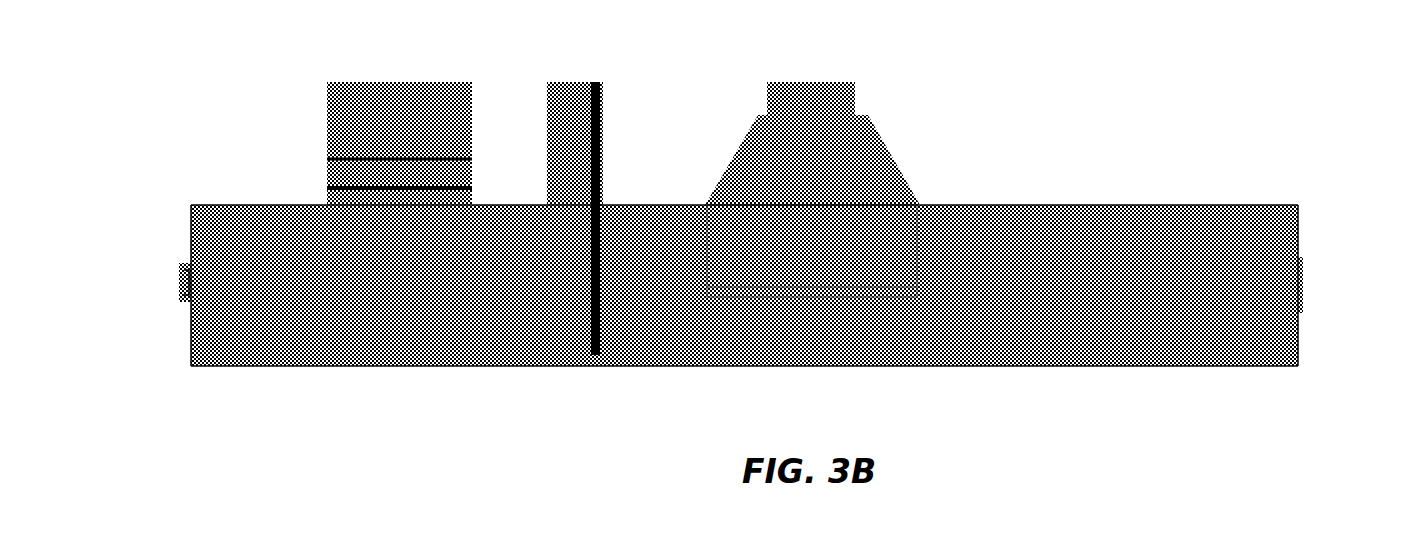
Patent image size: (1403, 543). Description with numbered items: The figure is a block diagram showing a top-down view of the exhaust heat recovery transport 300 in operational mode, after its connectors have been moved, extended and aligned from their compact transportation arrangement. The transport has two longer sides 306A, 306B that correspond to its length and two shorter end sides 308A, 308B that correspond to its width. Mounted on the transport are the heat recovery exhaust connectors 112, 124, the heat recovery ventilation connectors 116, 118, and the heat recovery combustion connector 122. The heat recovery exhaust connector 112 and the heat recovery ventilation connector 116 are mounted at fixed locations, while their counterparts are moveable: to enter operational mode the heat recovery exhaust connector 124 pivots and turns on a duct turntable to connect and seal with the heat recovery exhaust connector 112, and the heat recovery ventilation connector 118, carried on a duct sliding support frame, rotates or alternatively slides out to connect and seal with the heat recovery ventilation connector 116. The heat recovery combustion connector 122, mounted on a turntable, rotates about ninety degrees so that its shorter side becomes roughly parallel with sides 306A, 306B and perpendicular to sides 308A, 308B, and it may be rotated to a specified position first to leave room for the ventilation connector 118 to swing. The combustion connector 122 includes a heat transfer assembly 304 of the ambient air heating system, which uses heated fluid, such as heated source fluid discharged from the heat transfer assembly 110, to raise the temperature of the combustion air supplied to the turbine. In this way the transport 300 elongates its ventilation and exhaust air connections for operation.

The exhaust heat recovery transport 300 is at (752, 223).
The heat transfer assembly 110 is at (852, 258).
The heat recovery exhaust connector 112 is at (875, 320).
The heat recovery ventilation connector 116 is at (572, 257).
The heat recovery ventilation connector 118 is at (571, 81).
The heat recovery combustion connector 122 is at (402, 80).
The heat recovery exhaust connector 124 is at (850, 131).
The heat transfer assembly 304 is at (355, 159).
The side 306A is at (1199, 203).
The side 306B is at (1207, 368).
The side 308A is at (1299, 228).
The side 308B is at (188, 238).